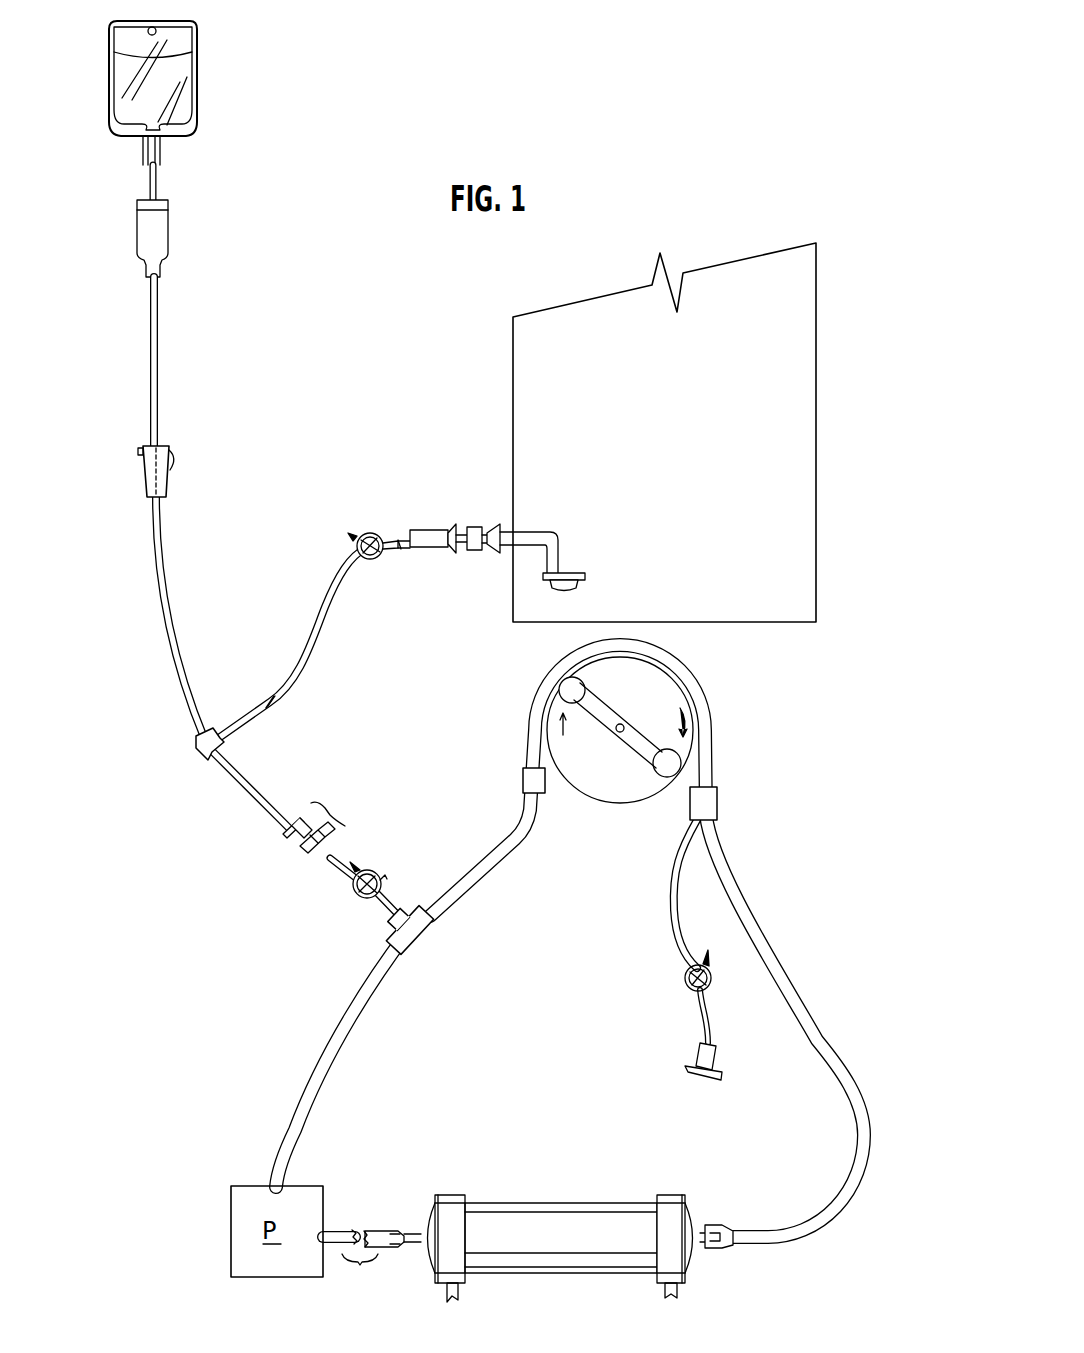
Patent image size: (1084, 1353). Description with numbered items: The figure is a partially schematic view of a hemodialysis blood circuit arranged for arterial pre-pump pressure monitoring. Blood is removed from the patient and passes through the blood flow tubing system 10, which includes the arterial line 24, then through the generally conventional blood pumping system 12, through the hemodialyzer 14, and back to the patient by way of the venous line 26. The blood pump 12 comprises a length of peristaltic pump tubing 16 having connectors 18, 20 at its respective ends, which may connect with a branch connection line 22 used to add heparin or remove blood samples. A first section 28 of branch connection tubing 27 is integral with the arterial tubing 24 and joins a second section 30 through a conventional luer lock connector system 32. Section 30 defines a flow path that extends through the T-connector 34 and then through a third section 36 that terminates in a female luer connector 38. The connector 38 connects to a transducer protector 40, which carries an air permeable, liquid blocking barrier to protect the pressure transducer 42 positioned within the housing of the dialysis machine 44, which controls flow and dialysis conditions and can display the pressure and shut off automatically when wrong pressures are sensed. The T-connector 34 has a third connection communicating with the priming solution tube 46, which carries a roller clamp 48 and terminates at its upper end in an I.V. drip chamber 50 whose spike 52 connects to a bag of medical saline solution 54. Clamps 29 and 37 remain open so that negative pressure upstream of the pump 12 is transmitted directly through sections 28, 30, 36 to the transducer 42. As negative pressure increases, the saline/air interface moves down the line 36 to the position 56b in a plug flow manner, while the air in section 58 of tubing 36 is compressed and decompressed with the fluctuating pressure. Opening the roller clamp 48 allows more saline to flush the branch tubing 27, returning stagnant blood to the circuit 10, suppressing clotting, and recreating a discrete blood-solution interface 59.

The blood flow tubing system 10 is at (378, 1008).
The blood pumping system 12 is at (633, 716).
The hemodialyzer 14 is at (584, 1245).
The peristaltic pump tubing 16 is at (707, 758).
The connector 18 is at (527, 782).
The connector 20 is at (713, 802).
The branch connection line 22 is at (675, 882).
The arterial line 24 is at (497, 840).
The venous line 26 is at (333, 1244).
The branch connection tubing 27 is at (262, 842).
The section of branch connection tubing 28 is at (373, 898).
The clamp 29 is at (363, 857).
The second section of branch connection tubing 30 is at (268, 800).
The luer lock connector system 32 is at (305, 845).
The T-connector 34 is at (205, 755).
The third section of branch connection tubing 36 is at (312, 676).
The clamp 37 is at (360, 535).
The female luer connector 38 is at (431, 535).
The transducer protector 40 is at (473, 550).
The pressure transducer 42 is at (566, 593).
The dialysis machine 44 is at (672, 423).
The priming solution tube 46 is at (167, 610).
The roller clamp 48 is at (170, 478).
The I.V. drip chamber 50 is at (162, 240).
The spike 52 is at (157, 190).
The bag of medical saline solution 54 is at (162, 88).
The solution-air interface 56b is at (268, 700).
The section of tubing 58 is at (399, 530).
The blood-solution interface 59 is at (393, 915).